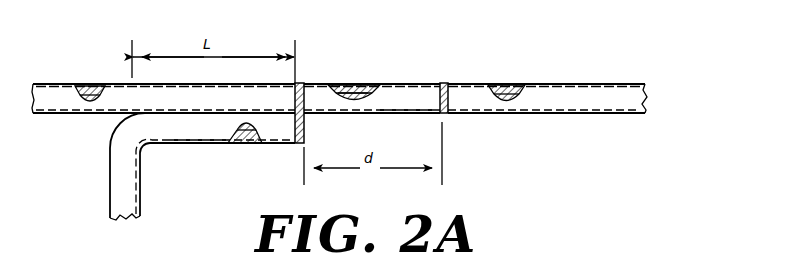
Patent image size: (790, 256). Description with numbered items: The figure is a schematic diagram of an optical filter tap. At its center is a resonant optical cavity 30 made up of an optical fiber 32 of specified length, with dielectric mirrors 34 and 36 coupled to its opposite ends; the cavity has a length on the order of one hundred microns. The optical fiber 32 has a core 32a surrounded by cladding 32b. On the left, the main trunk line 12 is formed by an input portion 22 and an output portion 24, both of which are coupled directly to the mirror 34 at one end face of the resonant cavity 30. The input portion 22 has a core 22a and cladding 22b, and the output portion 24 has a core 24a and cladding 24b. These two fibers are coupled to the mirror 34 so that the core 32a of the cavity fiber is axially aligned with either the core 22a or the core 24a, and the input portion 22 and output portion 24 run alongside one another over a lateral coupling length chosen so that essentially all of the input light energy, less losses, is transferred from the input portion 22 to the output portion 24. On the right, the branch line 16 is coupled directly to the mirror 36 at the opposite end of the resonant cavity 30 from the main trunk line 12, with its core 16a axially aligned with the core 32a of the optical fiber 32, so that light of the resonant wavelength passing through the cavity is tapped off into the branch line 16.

The main trunk line 12 is at (182, 138).
The branch line 16 is at (547, 95).
The core of branch line 16a is at (507, 100).
The input portion 22 is at (163, 89).
The core of input portion 22a is at (93, 86).
The cladding of input portion 22b is at (262, 87).
The output portion 24 is at (202, 166).
The core of output portion 24a is at (247, 138).
The cladding of output portion 24b is at (232, 137).
The resonant optical cavity 30 is at (379, 75).
The optical fiber 32 is at (372, 95).
The core of optical fiber 32a is at (353, 103).
The cladding of optical fiber 32b is at (427, 107).
The dielectric mirror 34 is at (304, 83).
The dielectric mirror 36 is at (443, 83).